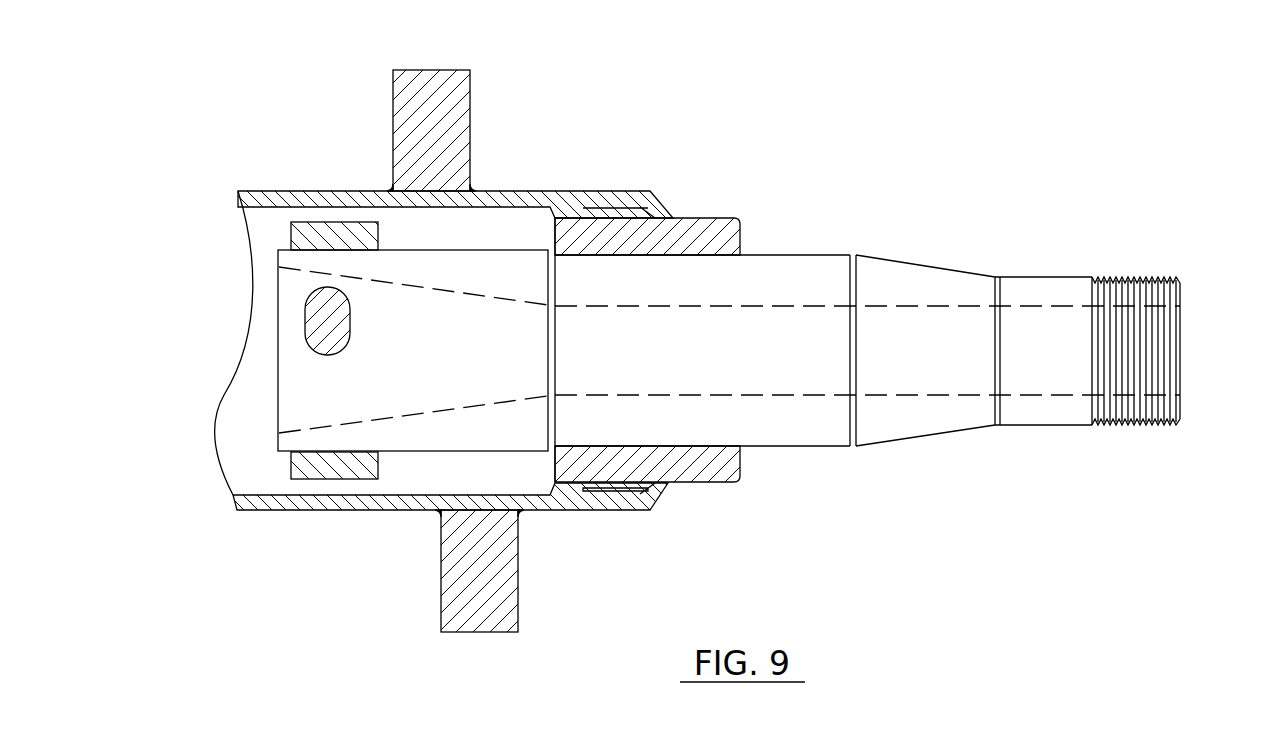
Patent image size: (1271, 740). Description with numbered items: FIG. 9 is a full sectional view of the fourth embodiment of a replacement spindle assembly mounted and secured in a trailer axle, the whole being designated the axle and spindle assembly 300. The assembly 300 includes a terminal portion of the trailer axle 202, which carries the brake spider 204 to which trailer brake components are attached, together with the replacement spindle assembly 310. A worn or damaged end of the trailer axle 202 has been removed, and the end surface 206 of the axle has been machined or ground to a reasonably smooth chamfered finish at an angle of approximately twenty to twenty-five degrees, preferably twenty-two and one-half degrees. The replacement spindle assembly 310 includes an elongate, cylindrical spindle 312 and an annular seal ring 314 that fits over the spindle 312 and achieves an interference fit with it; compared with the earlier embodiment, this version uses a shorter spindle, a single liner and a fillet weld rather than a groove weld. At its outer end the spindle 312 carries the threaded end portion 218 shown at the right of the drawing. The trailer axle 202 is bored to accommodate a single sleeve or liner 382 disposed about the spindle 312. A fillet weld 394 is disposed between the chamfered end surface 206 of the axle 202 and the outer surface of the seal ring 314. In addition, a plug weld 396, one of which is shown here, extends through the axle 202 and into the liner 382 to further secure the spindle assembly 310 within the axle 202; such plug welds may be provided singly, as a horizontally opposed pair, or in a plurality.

The axle and spindle assembly 300 is at (898, 109).
The trailer axle 202 is at (323, 195).
The brake spider 204 is at (437, 86).
The end surface 206 is at (654, 215).
The fillet weld 394 is at (655, 512).
The sleeve or liner 382 is at (331, 470).
The plug weld 396 is at (322, 318).
The replacement spindle assembly 310 is at (766, 232).
The annular seal ring 314 is at (735, 217).
The spindle 312 is at (1063, 250).
The threads 218 is at (1181, 346).